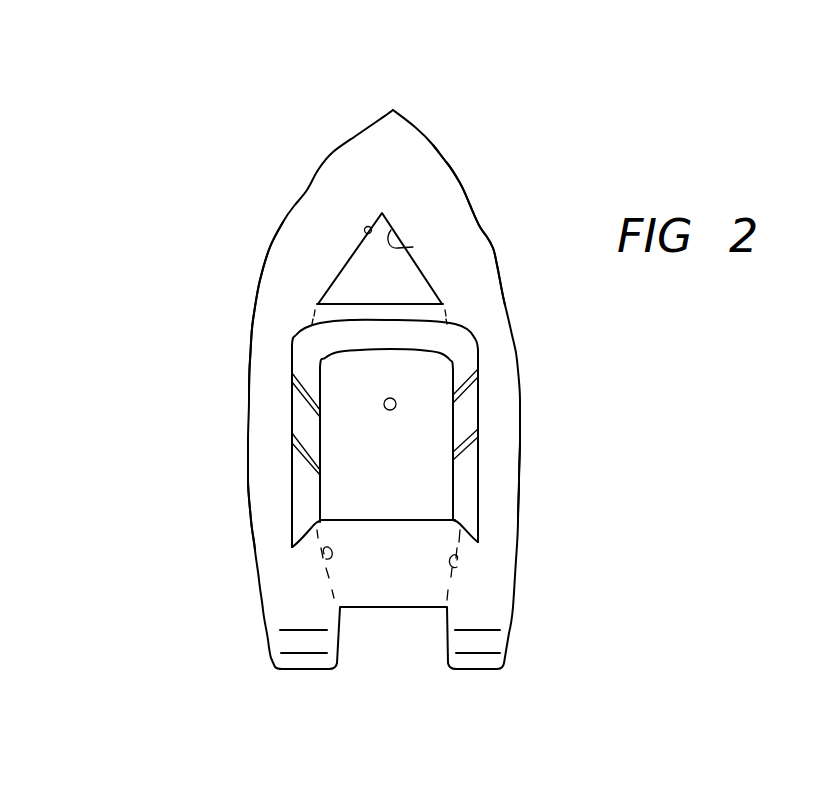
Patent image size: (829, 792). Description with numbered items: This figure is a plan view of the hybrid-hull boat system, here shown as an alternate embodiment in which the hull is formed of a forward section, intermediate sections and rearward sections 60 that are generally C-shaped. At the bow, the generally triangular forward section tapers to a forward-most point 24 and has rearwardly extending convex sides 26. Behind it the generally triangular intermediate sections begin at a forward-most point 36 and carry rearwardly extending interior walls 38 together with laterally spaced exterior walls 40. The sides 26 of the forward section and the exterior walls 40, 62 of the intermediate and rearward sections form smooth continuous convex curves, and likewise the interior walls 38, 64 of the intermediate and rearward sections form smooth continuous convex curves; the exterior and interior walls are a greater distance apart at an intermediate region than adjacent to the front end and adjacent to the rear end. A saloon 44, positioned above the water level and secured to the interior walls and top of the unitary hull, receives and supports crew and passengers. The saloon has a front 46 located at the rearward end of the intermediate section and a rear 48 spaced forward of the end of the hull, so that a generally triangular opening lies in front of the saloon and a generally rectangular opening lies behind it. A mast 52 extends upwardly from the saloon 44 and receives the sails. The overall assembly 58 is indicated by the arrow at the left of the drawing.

The forward-most point 24 is at (393, 110).
The convex sides 26 is at (435, 145).
The forward-most point 36 is at (385, 212).
The interior walls 38 is at (365, 228).
The exterior walls 40 is at (283, 222).
The saloon 44 is at (405, 440).
The front of the saloon 46 is at (378, 303).
The rear of the saloon 48 is at (378, 522).
The mast 52 is at (385, 403).
The seat assembly 58 is at (207, 380).
The rearward sections 60 is at (295, 608).
The exterior walls of the rearward sections 62 is at (247, 478).
The interior walls of the rearward sections 64 is at (326, 559).